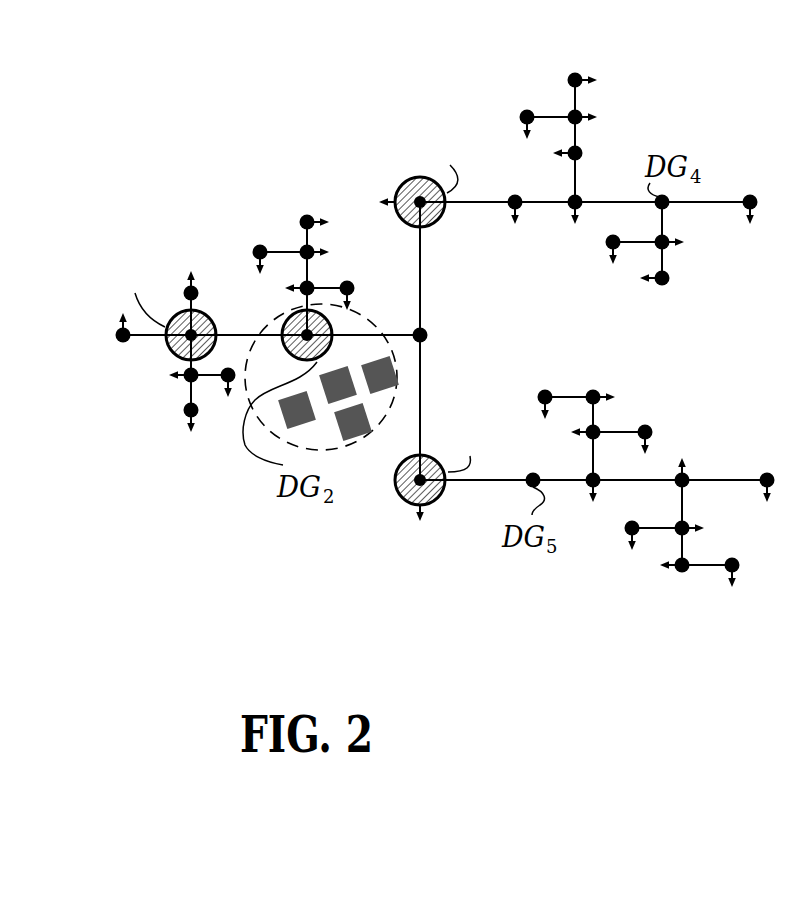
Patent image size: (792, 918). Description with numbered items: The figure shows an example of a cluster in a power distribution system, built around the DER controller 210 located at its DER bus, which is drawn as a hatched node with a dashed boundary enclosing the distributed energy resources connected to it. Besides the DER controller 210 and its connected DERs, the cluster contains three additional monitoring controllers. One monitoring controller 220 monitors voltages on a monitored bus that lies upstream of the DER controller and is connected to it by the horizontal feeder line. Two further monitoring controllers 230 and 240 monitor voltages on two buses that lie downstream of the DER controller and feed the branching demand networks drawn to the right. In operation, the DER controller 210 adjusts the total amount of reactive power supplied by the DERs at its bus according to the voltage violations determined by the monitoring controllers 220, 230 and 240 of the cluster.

The DER controller 210 is at (284, 332).
The monitoring controller 220 is at (167, 346).
The monitoring controller 230 is at (400, 183).
The monitoring controller 240 is at (402, 503).